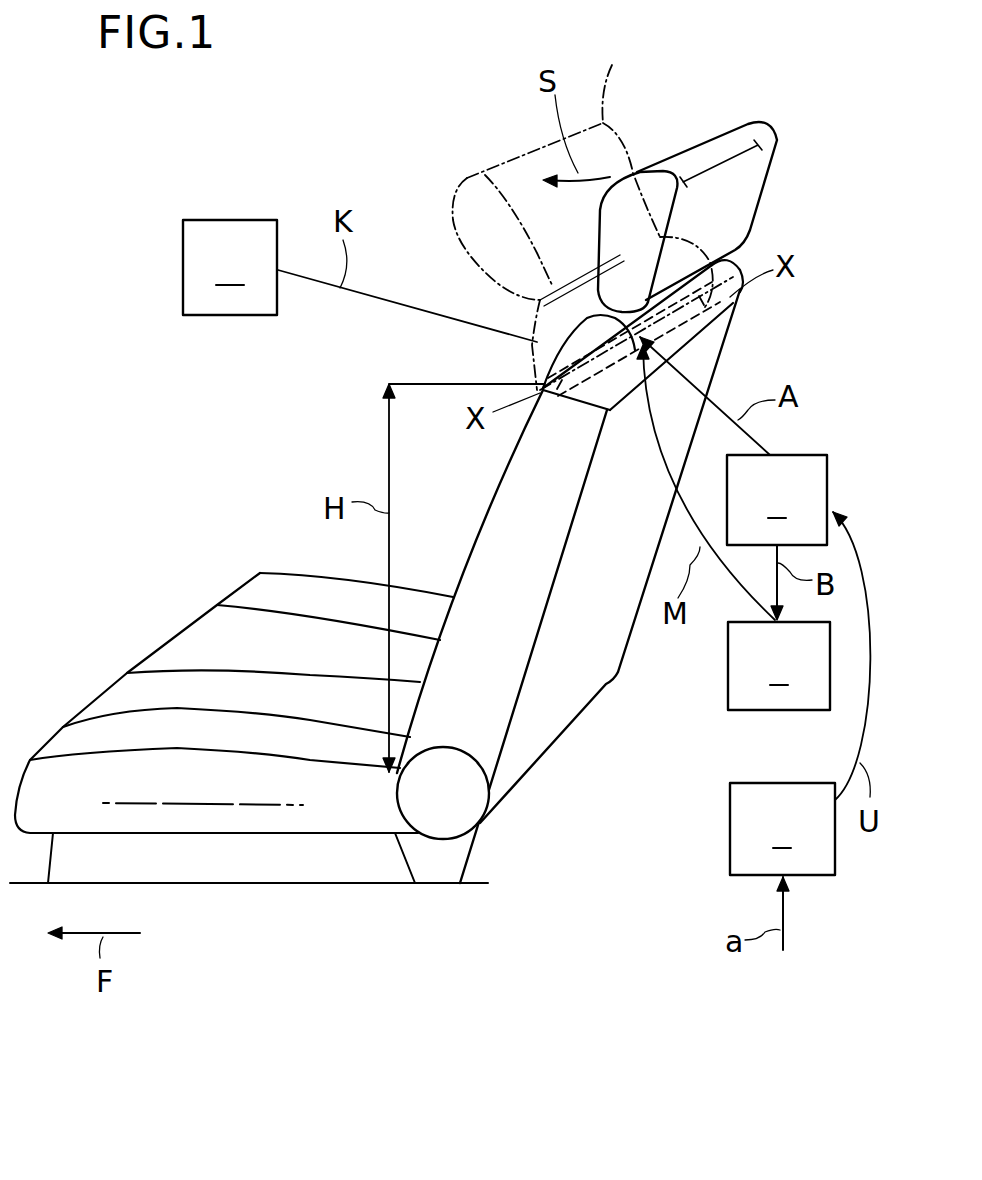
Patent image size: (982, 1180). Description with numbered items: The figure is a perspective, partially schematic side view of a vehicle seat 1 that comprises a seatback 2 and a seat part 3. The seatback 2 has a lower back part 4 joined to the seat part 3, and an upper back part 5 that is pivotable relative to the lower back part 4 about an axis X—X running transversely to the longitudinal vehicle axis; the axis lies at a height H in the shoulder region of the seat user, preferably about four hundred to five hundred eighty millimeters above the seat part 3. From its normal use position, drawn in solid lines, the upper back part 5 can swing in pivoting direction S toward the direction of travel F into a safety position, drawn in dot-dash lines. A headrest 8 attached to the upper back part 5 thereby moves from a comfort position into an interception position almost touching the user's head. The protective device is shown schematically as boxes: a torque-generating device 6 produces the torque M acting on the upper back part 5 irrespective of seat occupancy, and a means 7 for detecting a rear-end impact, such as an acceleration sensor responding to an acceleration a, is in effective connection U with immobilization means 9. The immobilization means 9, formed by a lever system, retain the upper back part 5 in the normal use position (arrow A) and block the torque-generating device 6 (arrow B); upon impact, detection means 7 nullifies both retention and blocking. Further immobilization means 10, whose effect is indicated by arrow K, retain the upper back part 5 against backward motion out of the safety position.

The vehicle seat 1 is at (247, 477).
The seatback 2 is at (498, 642).
The seat part 3 is at (298, 806).
The lower back part 4 is at (482, 743).
The upper back part 5 is at (725, 330).
The torque-generating device 6 is at (779, 666).
The means for detecting a rear-end impact 7 is at (782, 829).
The headrest 8 is at (710, 150).
The immobilization means 9 is at (777, 500).
The further immobilization means 10 is at (230, 267).